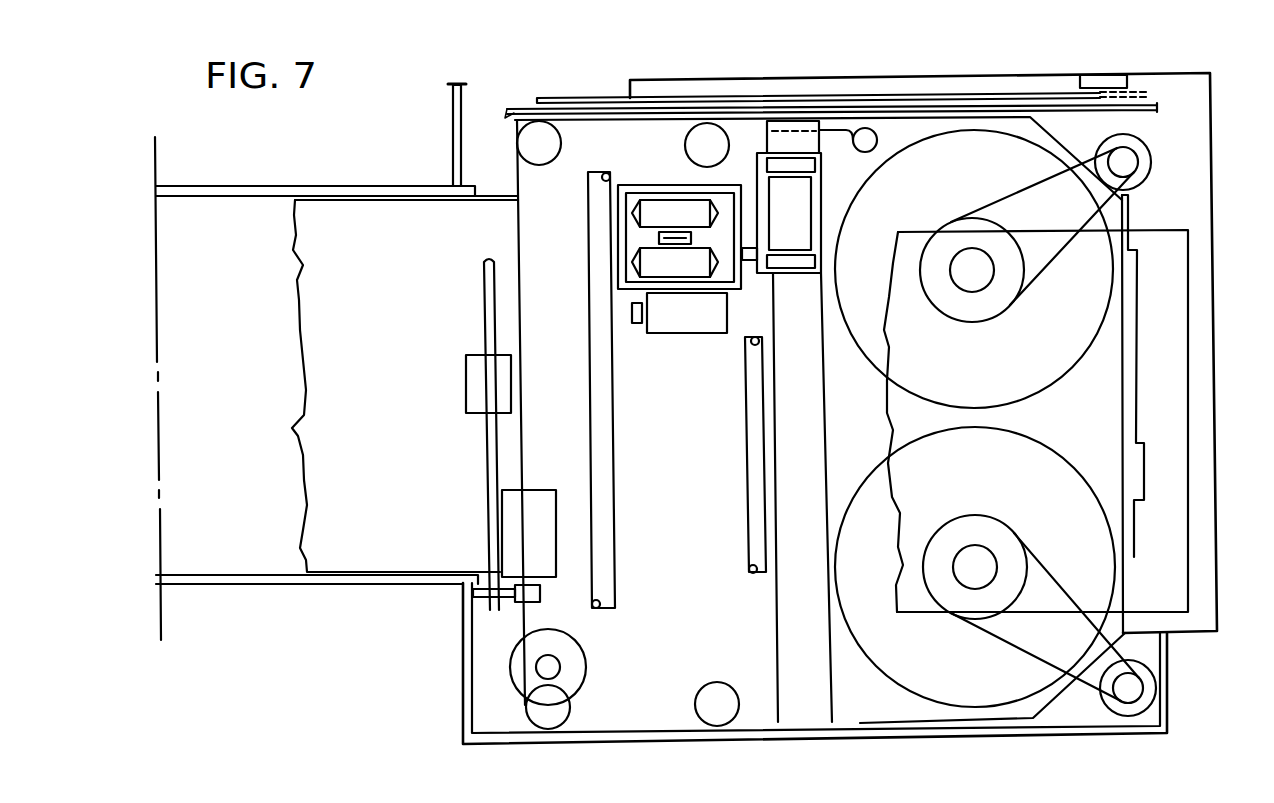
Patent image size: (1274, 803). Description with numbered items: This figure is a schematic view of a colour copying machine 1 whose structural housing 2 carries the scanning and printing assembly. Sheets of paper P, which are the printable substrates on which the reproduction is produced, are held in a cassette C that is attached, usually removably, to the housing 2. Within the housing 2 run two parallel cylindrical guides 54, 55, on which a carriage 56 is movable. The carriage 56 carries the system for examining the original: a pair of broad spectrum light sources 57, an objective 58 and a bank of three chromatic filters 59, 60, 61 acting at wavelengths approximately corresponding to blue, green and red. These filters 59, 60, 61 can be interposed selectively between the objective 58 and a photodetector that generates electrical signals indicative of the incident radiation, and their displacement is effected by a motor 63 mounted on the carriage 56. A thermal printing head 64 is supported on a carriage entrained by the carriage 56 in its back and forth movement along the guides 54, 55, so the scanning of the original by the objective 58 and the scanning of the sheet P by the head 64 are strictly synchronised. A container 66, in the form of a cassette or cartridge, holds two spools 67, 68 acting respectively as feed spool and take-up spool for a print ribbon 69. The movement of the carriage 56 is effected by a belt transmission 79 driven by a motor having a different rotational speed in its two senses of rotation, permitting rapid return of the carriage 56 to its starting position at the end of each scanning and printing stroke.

The copying machine 1 is at (1219, 212).
The housing 2 is at (1167, 693).
The cylindrical guide 54 is at (603, 418).
The cylindrical guide 55 is at (760, 507).
The carriage 56 is at (638, 188).
The broad spectrum light sources 57 is at (676, 262).
The objective 58 is at (688, 233).
The chromatic filter 59 is at (638, 287).
The chromatic filter 60 is at (679, 282).
The chromatic filter 61 is at (702, 280).
The motor 63 is at (707, 313).
The thermal printing head 64 is at (795, 167).
The container 66 is at (1123, 377).
The feed spool 67 is at (923, 157).
The take-up spool 68 is at (907, 660).
The print ribbon 69 is at (808, 433).
The belt transmission 79 is at (518, 227).
The sheet of paper P is at (228, 262).
The cassette C is at (210, 588).